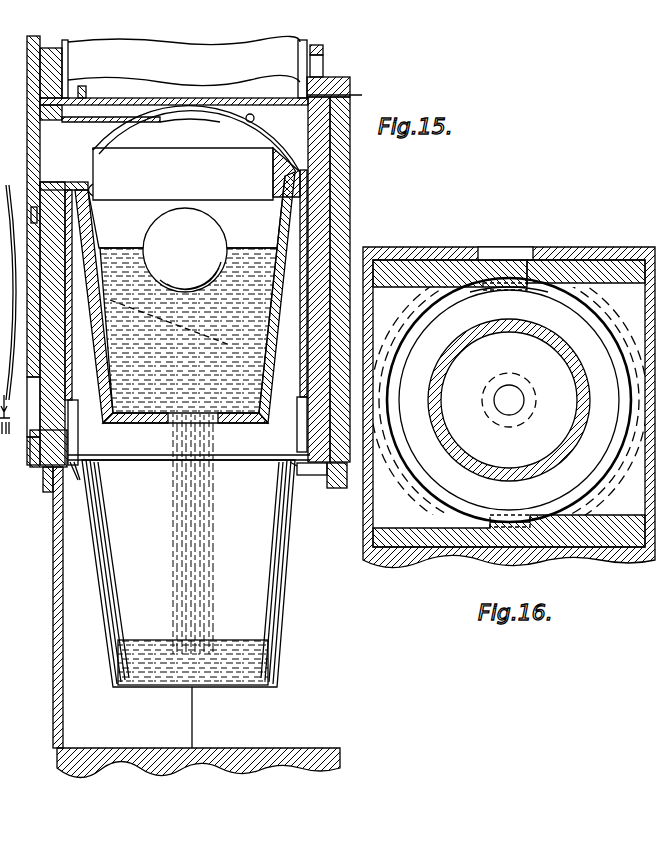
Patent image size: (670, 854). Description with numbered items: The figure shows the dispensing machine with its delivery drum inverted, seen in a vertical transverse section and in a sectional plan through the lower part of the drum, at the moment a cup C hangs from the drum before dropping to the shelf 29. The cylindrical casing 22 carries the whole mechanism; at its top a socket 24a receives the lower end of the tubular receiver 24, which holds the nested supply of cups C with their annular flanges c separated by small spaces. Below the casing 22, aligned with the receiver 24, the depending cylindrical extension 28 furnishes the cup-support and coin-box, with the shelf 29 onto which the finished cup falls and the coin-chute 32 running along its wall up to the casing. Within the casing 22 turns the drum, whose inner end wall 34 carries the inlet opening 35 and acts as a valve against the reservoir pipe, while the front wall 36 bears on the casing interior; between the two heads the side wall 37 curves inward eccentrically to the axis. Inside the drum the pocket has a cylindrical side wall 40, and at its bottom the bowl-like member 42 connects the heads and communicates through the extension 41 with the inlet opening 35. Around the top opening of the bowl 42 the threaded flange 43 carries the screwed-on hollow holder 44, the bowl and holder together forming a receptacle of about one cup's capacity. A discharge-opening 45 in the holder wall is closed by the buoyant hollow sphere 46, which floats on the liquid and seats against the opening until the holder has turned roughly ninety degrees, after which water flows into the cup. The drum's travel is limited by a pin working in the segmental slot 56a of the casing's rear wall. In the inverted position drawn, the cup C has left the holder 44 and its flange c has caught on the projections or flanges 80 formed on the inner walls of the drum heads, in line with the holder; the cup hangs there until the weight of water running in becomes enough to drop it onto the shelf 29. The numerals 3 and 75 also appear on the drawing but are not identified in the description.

In FIG. 15, the housing wall 3 is at (27, 70).
In FIG. 15, the casing 22 is at (358, 94).
In FIG. 16, the casing 22 is at (378, 413).
In FIG. 15, the receiver 24 is at (297, 58).
In FIG. 15, the socket 24a is at (82, 88).
In FIG. 15, the depending cylindrical extension 28 is at (53, 600).
In FIG. 15, the shelf 29 is at (225, 748).
In FIG. 15, the coin-chute 32 is at (295, 476).
In FIG. 15, the inner end wall 34 is at (55, 195).
In FIG. 16, the inner end wall 34 is at (430, 268).
In FIG. 16, the inlet opening 35 is at (493, 250).
In FIG. 15, the front wall 36 is at (333, 80).
In FIG. 16, the front wall 36 is at (396, 560).
In FIG. 15, the side wall 37 is at (272, 106).
In FIG. 15, the cylindrical side wall 40 is at (78, 246).
In FIG. 16, the cylindrical side wall 40 is at (432, 300).
In FIG. 15, the extension 41 is at (115, 118).
In FIG. 15, the bowl-like member 42 is at (246, 122).
In FIG. 15, the threaded flange 43 is at (92, 193).
In FIG. 15, the hollow holder 44 is at (106, 378).
In FIG. 16, the hollow holder 44 is at (452, 440).
In FIG. 15, the discharge-opening 45 is at (171, 425).
In FIG. 16, the discharge-opening 45 is at (512, 400).
In FIG. 15, the valve member 46 is at (185, 250).
In FIG. 15, the segmental slot 56a is at (31, 215).
In FIG. 15, the opening 75 is at (32, 425).
In FIG. 15, the projections or flanges 80 is at (82, 470).
In FIG. 16, the projections or flanges 80 is at (505, 290).
In FIG. 15, the cup C is at (110, 88).
In FIG. 16, the cup C is at (548, 318).
In FIG. 15, the annular flange c is at (150, 104).
In FIG. 16, the annular flange c is at (532, 300).